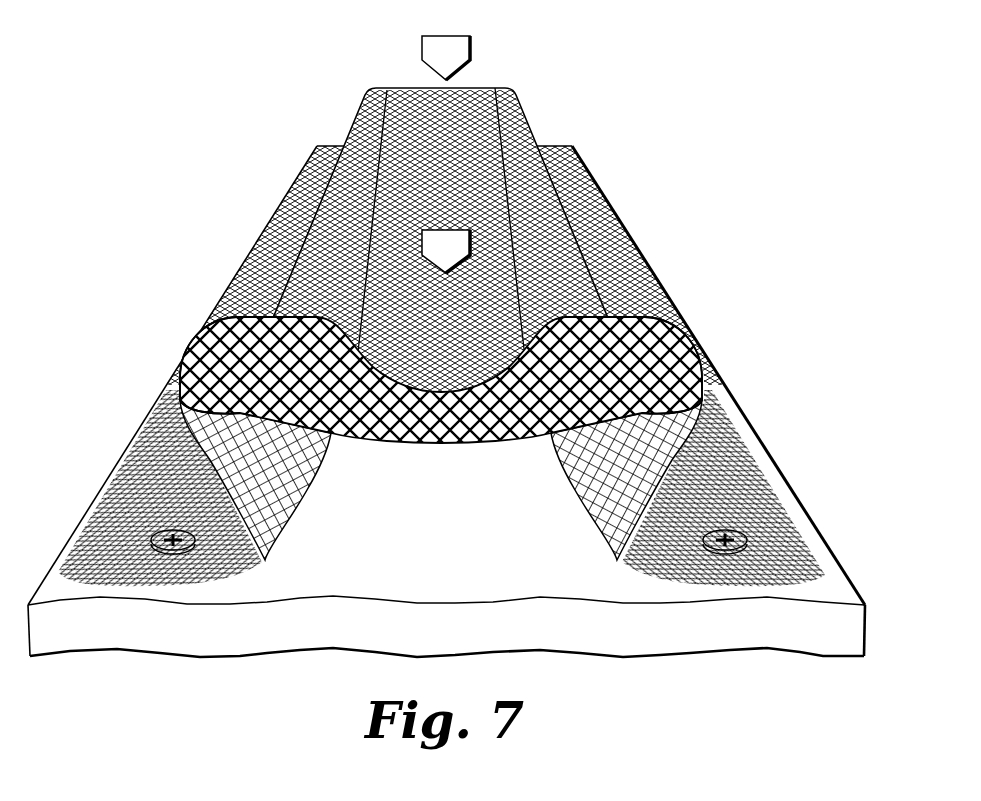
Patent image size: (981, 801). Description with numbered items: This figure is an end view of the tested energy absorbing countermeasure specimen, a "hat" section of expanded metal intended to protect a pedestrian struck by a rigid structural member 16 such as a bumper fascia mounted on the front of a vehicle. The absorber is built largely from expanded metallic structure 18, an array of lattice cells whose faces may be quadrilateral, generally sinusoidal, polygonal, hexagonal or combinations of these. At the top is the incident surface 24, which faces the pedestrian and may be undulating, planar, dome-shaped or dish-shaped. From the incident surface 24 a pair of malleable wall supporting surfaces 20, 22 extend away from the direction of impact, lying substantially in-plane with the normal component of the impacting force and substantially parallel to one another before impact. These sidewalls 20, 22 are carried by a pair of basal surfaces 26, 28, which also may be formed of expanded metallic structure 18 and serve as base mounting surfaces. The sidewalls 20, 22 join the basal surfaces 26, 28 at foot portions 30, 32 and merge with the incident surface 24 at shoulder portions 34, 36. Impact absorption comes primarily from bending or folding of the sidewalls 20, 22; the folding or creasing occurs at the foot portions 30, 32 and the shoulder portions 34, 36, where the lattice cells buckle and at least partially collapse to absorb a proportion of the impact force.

The rigid structural member 16 is at (832, 590).
The expanded metallic structure 18 is at (330, 220).
The malleable wall supporting surface 20 is at (192, 433).
The malleable wall supporting surface 22 is at (720, 413).
The incident surface 24 is at (443, 393).
The basal surface 26 is at (157, 513).
The basal surface 28 is at (717, 487).
The foot portion 30 is at (262, 558).
The foot portion 32 is at (622, 558).
The shoulder portion 34 is at (190, 350).
The shoulder portion 36 is at (688, 322).